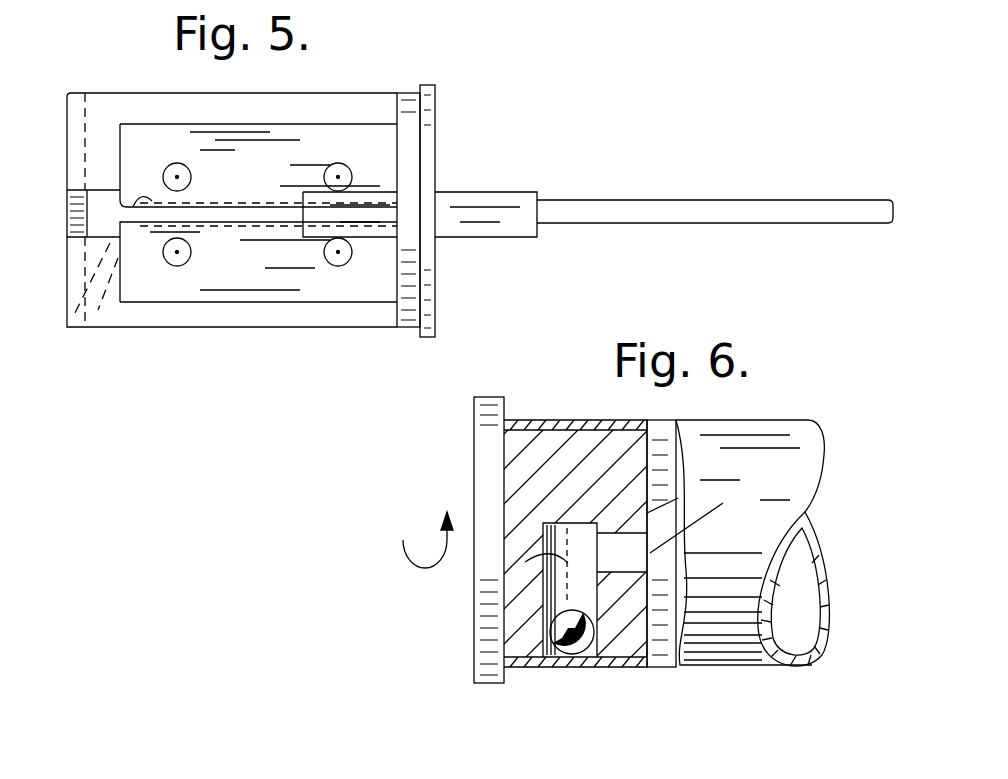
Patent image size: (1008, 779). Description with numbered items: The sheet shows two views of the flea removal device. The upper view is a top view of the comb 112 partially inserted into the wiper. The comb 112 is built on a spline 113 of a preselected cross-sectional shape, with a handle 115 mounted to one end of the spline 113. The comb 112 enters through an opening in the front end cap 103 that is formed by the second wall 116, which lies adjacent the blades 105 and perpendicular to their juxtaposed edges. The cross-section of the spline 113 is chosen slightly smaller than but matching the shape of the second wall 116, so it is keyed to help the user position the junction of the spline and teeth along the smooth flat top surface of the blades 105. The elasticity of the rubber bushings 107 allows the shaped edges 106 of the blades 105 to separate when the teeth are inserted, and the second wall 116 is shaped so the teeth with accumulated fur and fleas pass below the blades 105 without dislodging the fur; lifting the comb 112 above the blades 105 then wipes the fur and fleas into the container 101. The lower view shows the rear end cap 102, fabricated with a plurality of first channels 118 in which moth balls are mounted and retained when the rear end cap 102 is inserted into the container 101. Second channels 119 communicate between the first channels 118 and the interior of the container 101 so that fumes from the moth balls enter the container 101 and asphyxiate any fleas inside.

In FIG. 6, the container 101 is at (568, 418).
In FIG. 6, the rear end cap 102 is at (484, 465).
In FIG. 5, the front end cap 103 is at (436, 108).
In FIG. 5, the blades 105 is at (232, 367).
In FIG. 5, the shaped edges 106 is at (82, 327).
In FIG. 5, the rubber bushings 107 is at (176, 176).
In FIG. 5, the comb 112 is at (598, 196).
In FIG. 5, the spline 113 is at (513, 225).
In FIG. 5, the handle 115 is at (786, 208).
In FIG. 5, the second wall 116 is at (437, 242).
In FIG. 6, the first channels 118 is at (540, 557).
In FIG. 6, the second channels 119 is at (683, 497).